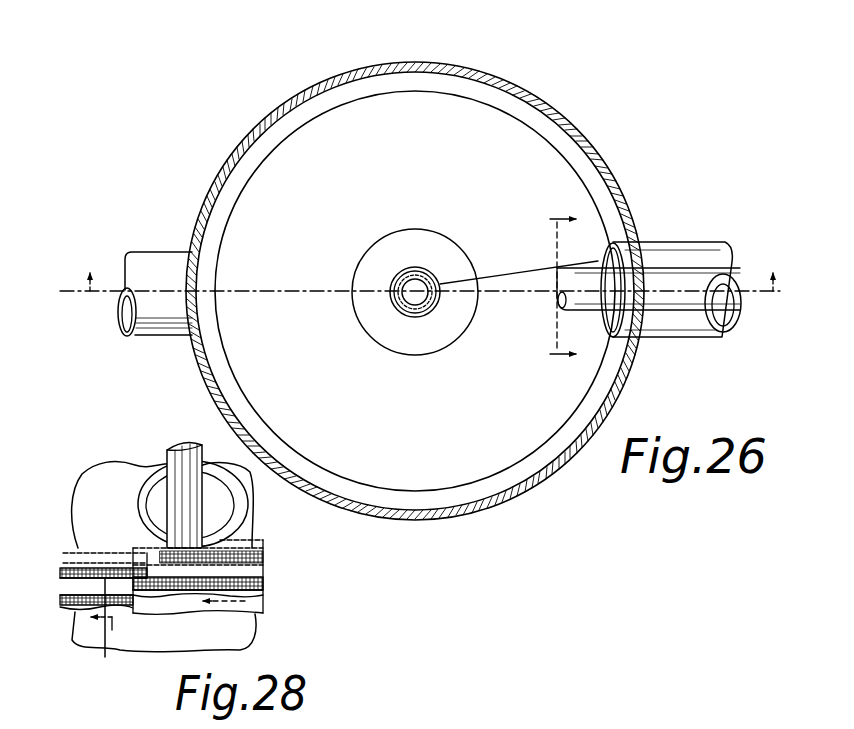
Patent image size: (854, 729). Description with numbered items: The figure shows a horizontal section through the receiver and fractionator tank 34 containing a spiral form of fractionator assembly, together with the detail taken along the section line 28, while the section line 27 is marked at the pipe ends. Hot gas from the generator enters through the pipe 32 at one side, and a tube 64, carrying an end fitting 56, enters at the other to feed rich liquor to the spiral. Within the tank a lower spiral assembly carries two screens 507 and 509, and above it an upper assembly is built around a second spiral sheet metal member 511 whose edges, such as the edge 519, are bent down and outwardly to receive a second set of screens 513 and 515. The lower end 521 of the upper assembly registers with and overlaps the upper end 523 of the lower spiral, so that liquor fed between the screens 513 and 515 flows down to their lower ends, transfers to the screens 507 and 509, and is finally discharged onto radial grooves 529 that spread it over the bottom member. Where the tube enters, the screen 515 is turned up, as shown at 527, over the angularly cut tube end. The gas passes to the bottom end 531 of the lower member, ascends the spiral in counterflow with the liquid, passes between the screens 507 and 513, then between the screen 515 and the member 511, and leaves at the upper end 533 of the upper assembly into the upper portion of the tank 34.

In FIG. 26, the receiver tank 34 is at (242, 154).
In FIG. 26, the pipe 32 is at (165, 262).
In FIG. 26, the tube 64 is at (694, 258).
In FIG. 26, the loop ring 56 is at (428, 280).
In FIG. 26, the upper end of upper assembly 533 is at (540, 268).
In FIG. 28, the upper end of upper assembly 533 is at (165, 548).
In FIG. 26, the edge of second spiral sheet metal member 519 is at (372, 305).
In FIG. 26, the second spiral sheet metal member 511 is at (415, 291).
In FIG. 26, the section line 27 is at (434, 305).
In FIG. 26, the section line 28 is at (544, 287).
In FIG. 28, the screen 515 is at (62, 573).
In FIG. 28, the screen 513 is at (62, 580).
In FIG. 28, the screen 507 is at (62, 597).
In FIG. 28, the screen 509 is at (70, 608).
In FIG. 28, the lower end of upper assembly 521 is at (132, 563).
In FIG. 28, the upper end of lower spiral 523 is at (152, 597).
In FIG. 28, the turned-up portion of screen 527 is at (157, 560).
In FIG. 28, the radial grooves 529 is at (255, 612).
In FIG. 28, the bottom end of sheet metal member 531 is at (111, 626).